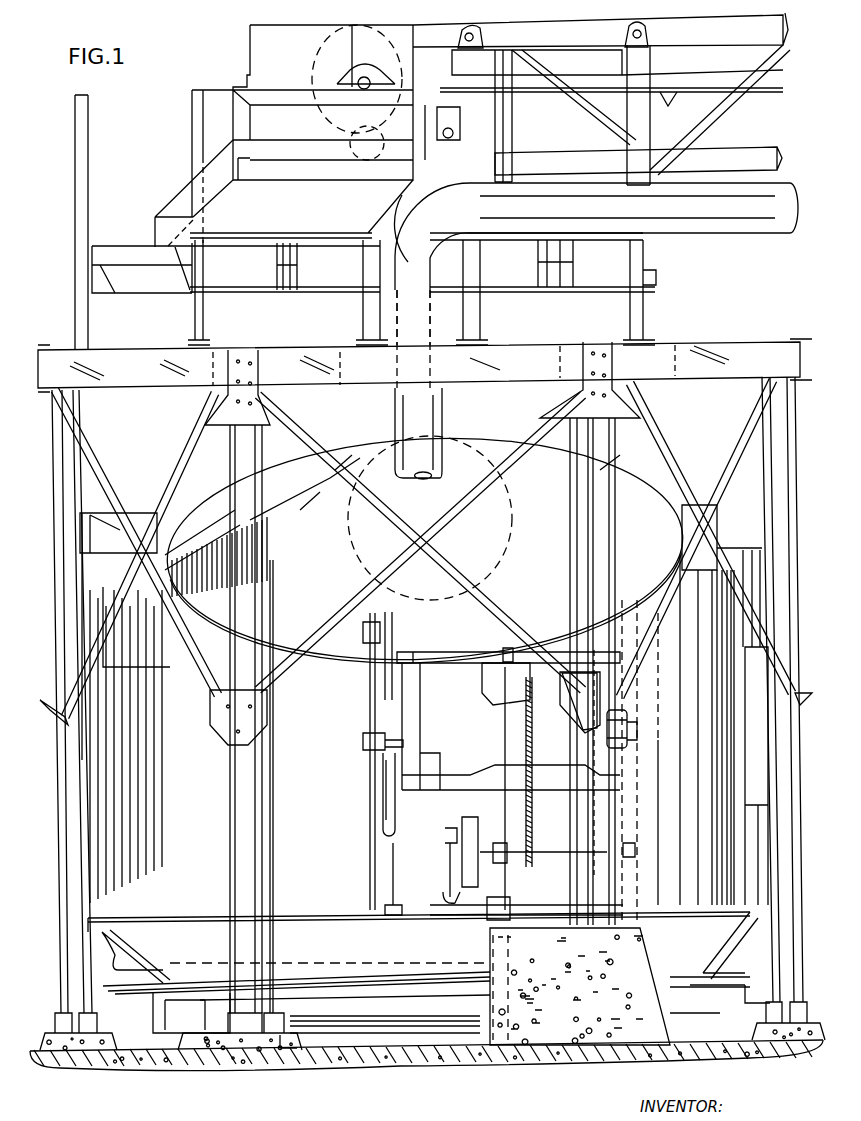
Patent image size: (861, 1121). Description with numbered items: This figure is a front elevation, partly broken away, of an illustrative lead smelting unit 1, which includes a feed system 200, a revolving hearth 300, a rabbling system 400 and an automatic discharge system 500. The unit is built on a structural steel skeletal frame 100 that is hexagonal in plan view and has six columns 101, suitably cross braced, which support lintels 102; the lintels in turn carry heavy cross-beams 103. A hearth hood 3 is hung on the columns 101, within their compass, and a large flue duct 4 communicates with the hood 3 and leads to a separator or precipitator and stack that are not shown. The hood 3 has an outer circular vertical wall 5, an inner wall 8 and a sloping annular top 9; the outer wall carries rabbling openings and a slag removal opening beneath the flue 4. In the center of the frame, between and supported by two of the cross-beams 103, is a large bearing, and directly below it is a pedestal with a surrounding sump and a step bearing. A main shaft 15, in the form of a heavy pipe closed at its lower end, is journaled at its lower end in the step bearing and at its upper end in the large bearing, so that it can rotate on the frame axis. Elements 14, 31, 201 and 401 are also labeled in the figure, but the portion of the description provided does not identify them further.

The smelting unit 1 is at (50, 580).
The hearth hood 3 is at (425, 551).
The flue duct 4 is at (487, 520).
The outer circular vertical wall 5 is at (125, 755).
The inner wall 8 is at (315, 462).
The sloping annular top 9 is at (205, 515).
The feed pipe 14 is at (420, 166).
The main shaft 15 is at (435, 420).
The supply conduit 31 is at (738, 232).
The structural steel skeletal frame 100 is at (44, 333).
The columns 101 is at (595, 450).
The lintels 102 is at (702, 343).
The cross-beams 103 is at (200, 325).
The feed system 200 is at (240, 55).
The conveyor frame 201 is at (722, 75).
The revolving hearth 300 is at (720, 942).
The rabbling system 400 is at (438, 645).
The pipe loop 401 is at (364, 795).
The automatic discharge system 500 is at (97, 955).